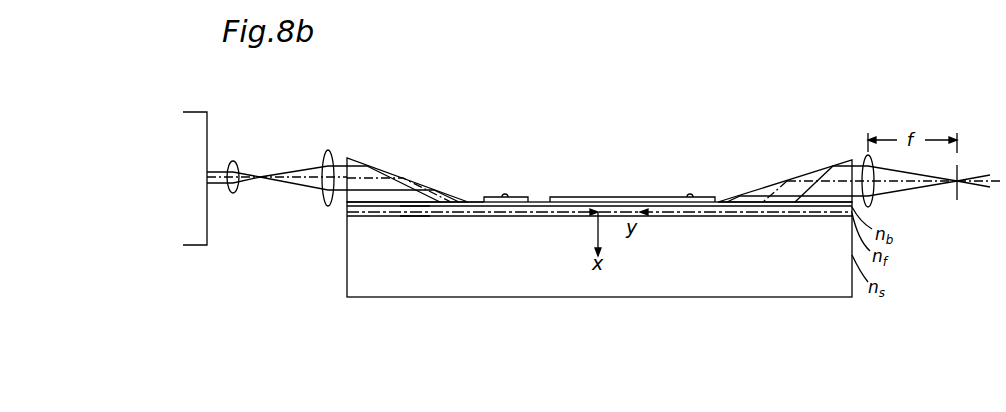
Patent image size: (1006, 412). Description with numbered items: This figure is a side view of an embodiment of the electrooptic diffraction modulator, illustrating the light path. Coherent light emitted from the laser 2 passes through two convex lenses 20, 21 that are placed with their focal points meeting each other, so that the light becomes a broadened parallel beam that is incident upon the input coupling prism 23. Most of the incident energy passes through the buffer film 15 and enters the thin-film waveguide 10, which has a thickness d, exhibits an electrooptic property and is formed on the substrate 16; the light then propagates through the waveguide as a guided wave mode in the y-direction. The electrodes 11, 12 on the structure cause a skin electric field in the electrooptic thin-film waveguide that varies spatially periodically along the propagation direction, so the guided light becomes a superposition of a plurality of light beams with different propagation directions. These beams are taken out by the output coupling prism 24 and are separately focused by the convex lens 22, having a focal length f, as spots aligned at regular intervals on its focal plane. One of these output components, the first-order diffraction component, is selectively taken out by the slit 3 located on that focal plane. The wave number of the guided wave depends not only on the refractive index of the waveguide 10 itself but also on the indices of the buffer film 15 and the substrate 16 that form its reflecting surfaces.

The laser 2 is at (193, 118).
The convex lens 20 is at (233, 161).
The convex lens 21 is at (324, 152).
The input coupling prism 23 is at (363, 170).
The substrate 16 is at (414, 221).
The buffer film 15 is at (474, 203).
The electrode 11 is at (518, 196).
The electrode 12 is at (668, 197).
The thin-film waveguide 10 is at (618, 210).
The output coupling prism 24 is at (787, 188).
The convex lens 22 is at (865, 157).
The slit 3 is at (952, 188).